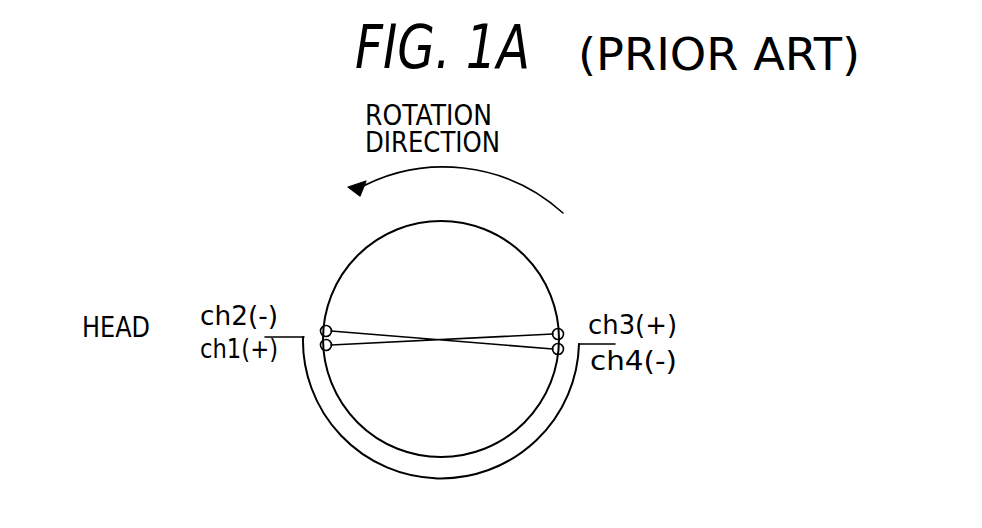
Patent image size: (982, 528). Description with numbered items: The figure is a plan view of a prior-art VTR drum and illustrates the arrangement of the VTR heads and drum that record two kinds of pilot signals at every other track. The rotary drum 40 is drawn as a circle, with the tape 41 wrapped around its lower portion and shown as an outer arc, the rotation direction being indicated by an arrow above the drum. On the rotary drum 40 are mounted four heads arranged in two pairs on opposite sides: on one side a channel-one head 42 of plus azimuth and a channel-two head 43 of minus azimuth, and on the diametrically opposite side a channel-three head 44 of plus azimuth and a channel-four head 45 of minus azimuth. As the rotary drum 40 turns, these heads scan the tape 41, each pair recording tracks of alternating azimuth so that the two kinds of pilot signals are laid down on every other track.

The rotary drum 40 is at (541, 280).
The tape 41 is at (535, 440).
The ch-1 head 42 is at (323, 373).
The ch-2 head 43 is at (317, 322).
The ch-3 head 44 is at (557, 330).
The ch-4 head 45 is at (560, 363).